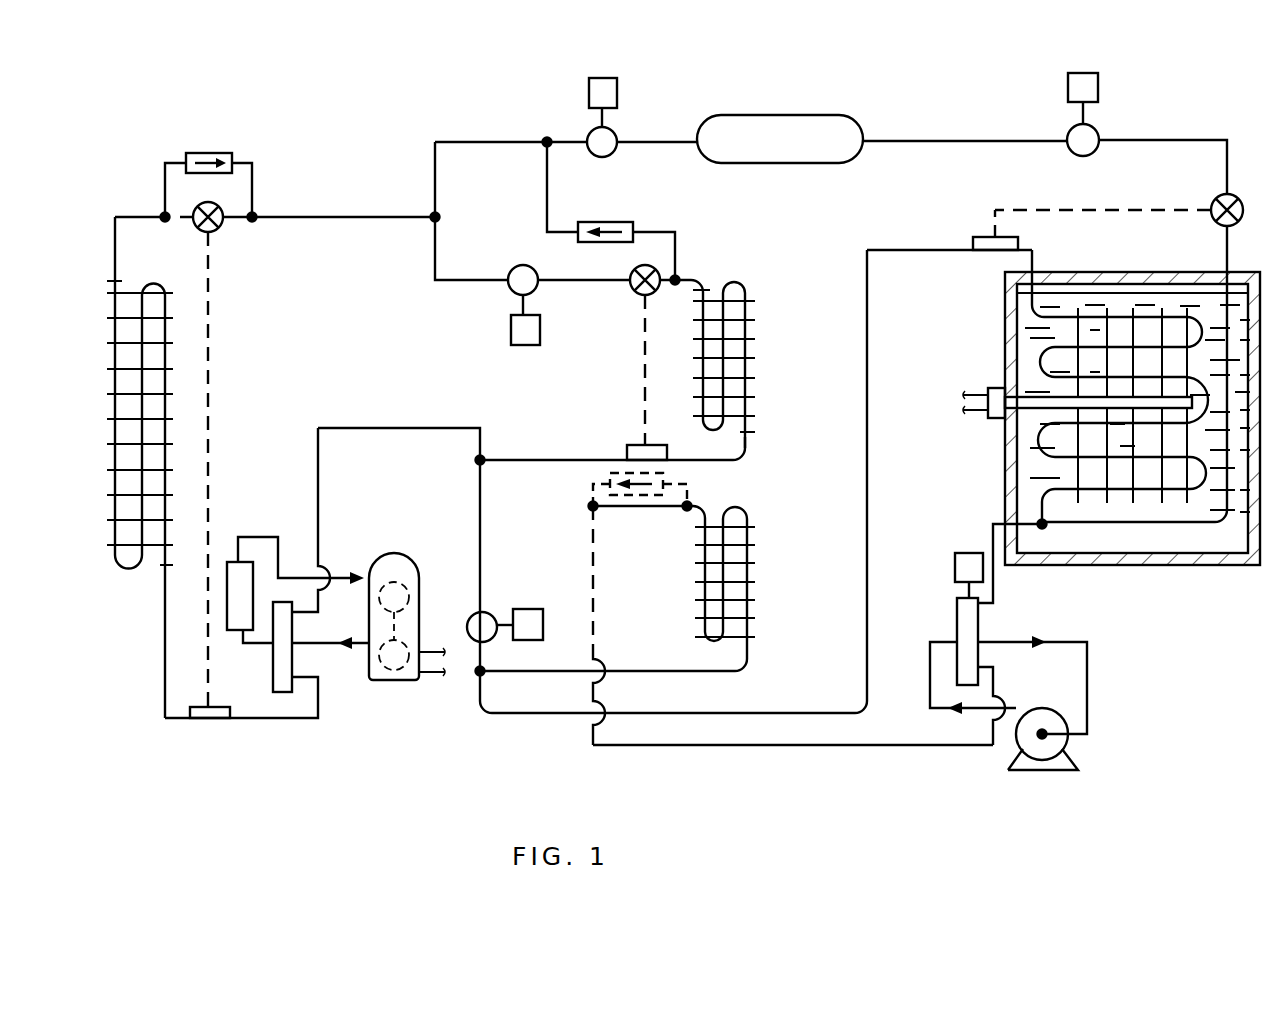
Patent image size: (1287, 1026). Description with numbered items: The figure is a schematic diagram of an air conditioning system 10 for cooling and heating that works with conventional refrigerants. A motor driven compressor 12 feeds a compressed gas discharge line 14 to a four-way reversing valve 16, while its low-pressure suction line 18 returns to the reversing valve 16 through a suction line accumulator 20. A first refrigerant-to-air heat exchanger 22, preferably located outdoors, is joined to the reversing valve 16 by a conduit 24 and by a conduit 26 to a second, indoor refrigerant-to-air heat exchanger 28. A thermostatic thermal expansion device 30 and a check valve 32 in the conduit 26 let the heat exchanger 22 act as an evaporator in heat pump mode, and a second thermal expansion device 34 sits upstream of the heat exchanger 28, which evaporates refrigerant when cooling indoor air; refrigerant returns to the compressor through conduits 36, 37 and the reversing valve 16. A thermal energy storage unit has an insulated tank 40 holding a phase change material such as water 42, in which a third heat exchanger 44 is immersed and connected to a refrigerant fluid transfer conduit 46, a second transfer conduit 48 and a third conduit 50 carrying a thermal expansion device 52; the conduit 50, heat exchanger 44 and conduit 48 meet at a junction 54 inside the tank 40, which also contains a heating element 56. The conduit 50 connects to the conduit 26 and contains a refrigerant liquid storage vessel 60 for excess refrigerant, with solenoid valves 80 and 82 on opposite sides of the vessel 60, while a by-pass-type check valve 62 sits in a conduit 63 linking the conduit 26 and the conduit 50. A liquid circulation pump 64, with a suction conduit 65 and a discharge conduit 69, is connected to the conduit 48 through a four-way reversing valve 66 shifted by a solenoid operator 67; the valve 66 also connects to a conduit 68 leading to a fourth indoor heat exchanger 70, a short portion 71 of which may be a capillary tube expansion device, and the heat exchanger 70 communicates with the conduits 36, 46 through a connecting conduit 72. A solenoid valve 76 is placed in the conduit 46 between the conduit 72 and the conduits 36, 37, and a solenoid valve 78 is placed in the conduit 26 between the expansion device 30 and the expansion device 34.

The air conditioning system 10 is at (802, 58).
The motor driven compressor 12 is at (400, 553).
The compressed gas discharge line 14 is at (325, 645).
The four-way reversing valve 16 is at (275, 681).
The suction line 18 is at (265, 537).
The suction line accumulator 20 is at (227, 620).
The first refrigerant-to-air heat exchanger 22 is at (168, 384).
The conduit 24 is at (166, 711).
The conduit 26 is at (345, 219).
The second refrigerant-to-air heat exchanger 28 is at (755, 368).
The thermal expansion device 30 is at (222, 229).
The check valve 32 is at (214, 152).
The second thermal expansion device 34 is at (633, 292).
The conduit 36 is at (422, 428).
The conduit 37 is at (577, 460).
The insulated tank 40 is at (1005, 325).
The water 42 is at (1030, 465).
The third heat exchanger 44 is at (1130, 312).
The refrigerant fluid transfer conduit 46 is at (910, 250).
The second refrigerant fluid transfer conduit 48 is at (993, 604).
The third conduit 50 is at (1172, 140).
The thermal expansion device 52 is at (1213, 201).
The junction 54 is at (1046, 534).
The heating element 56 is at (1030, 392).
The refrigerant liquid storage vessel 60 is at (829, 116).
The by-pass-type check valve 62 is at (616, 222).
The conduit 63 is at (547, 220).
The liquid circulation pump 64 is at (1045, 745).
The inlet or suction conduit 65 is at (1087, 696).
The four-way reversing valve 66 is at (957, 615).
The solenoid operator 67 is at (968, 553).
The conduit 68 is at (789, 750).
The discharge conduit 69 is at (930, 690).
The fourth heat exchanger 70 is at (755, 578).
The short portion of conduit 71 is at (637, 507).
The connecting conduit 72 is at (632, 671).
The solenoid operated valve 76 is at (492, 614).
The solenoid valve 78 is at (514, 271).
The solenoid operated valve 80 is at (591, 131).
The solenoid operated valve 82 is at (1068, 130).